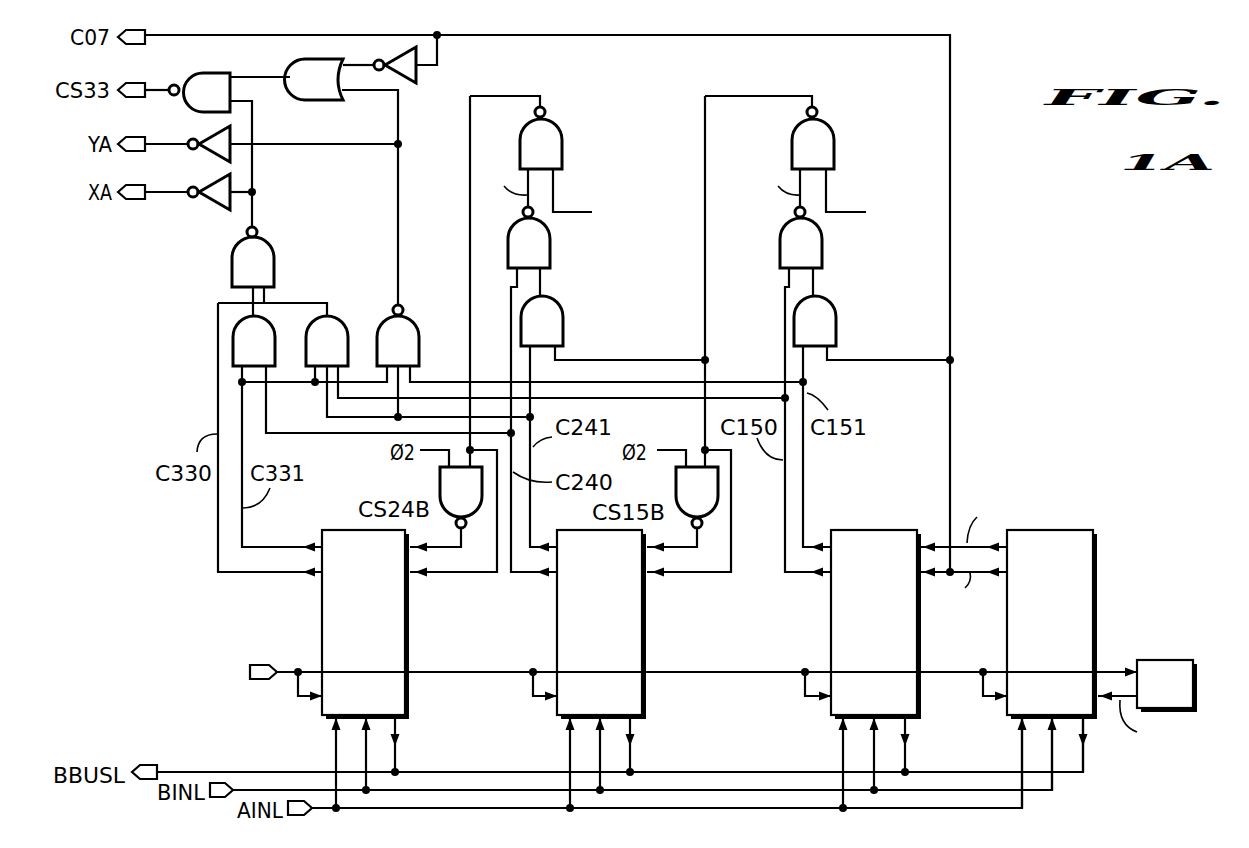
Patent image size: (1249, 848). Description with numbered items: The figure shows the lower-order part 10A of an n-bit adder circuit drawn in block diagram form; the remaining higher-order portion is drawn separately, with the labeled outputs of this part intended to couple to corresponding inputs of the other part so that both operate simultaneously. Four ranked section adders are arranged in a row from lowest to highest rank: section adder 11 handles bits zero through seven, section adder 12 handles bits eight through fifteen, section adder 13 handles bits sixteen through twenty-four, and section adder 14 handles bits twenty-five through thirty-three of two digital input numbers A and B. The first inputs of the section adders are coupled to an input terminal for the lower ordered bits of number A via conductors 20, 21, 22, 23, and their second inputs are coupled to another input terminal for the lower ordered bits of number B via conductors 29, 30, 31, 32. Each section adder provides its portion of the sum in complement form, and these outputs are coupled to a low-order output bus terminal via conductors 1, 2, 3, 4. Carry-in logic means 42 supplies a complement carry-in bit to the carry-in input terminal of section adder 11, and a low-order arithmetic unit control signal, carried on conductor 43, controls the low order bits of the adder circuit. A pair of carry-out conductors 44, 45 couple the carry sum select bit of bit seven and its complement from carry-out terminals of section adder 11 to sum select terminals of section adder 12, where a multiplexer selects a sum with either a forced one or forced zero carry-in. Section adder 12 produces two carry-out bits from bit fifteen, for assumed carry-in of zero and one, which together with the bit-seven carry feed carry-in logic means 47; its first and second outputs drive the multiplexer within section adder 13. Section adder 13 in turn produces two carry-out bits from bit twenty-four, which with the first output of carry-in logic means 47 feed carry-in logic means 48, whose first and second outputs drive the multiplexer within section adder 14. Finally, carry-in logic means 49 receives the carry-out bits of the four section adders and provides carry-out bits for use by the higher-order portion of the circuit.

The adder circuit part 10A is at (1152, 246).
The carry-in logic means 49 is at (183, 255).
The carry-in logic means 48 is at (600, 95).
The carry-in logic means 47 is at (855, 97).
The section adder 14 is at (410, 645).
The section adder 13 is at (648, 655).
The section adder 12 is at (830, 650).
The section adder 11 is at (1067, 528).
The carry-out conductor 44 is at (940, 540).
The carry-out conductor 45 is at (992, 578).
The conductor 43 is at (285, 668).
The carry-in logic means 42 is at (1168, 660).
The conductor 32 is at (365, 740).
The conductor 23 is at (335, 762).
The conductor 4 is at (400, 758).
The conductor 31 is at (600, 745).
The conductor 22 is at (570, 762).
The conductor 3 is at (633, 750).
The conductor 30 is at (873, 745).
The conductor 21 is at (842, 760).
The conductor 2 is at (907, 750).
The conductor 29 is at (1052, 745).
The conductor 20 is at (1020, 762).
The conductor 1 is at (1085, 750).